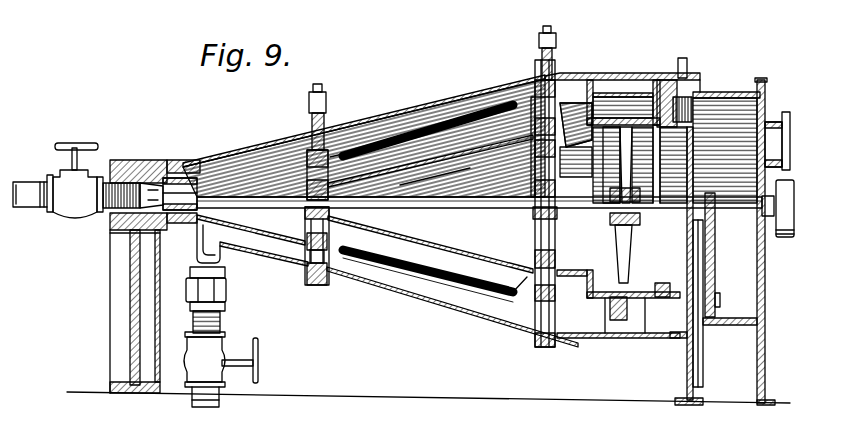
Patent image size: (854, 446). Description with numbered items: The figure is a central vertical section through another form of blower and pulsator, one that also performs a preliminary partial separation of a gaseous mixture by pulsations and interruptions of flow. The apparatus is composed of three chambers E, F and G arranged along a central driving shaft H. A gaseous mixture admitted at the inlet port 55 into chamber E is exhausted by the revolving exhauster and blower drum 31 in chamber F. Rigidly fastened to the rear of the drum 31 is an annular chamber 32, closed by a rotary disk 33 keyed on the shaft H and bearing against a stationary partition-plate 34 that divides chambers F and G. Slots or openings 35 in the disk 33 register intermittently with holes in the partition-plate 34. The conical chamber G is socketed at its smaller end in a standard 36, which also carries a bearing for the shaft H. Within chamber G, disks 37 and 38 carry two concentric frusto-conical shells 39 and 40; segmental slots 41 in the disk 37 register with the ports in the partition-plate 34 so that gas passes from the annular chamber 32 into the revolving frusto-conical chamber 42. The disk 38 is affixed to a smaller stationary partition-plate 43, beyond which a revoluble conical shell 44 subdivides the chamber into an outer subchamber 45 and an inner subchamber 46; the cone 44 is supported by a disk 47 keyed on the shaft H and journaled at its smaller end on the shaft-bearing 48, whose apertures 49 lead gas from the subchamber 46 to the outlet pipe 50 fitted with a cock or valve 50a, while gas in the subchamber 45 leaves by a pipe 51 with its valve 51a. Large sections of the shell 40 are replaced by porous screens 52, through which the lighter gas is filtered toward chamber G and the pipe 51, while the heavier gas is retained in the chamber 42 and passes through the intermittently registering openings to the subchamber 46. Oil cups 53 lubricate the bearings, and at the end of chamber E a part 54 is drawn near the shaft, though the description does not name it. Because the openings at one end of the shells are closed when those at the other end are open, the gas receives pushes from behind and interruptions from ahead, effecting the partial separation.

The revolving exhauster and blower drum 31 is at (652, 77).
The annular chamber 32 is at (582, 72).
The rotary disk 33 is at (560, 70).
The stationary partition-plate 34 is at (537, 87).
The slots or openings 35 is at (565, 130).
The standard 36 is at (120, 158).
The disk 37 is at (456, 182).
The disk 38 is at (332, 157).
The frusto-conical shell 39 is at (528, 277).
The frusto-conical shell 40 is at (333, 250).
The segmental slots or openings 41 is at (513, 117).
The revolving frusto-conical chamber 42 is at (467, 268).
The stationary partition-plate 43 is at (314, 270).
The conical shell 44 is at (285, 170).
The outer subchamber 45 is at (264, 249).
The inner subchamber 46 is at (251, 227).
The disk 47 is at (309, 237).
The shaft-bearing 48 is at (190, 158).
The apertures 49 is at (174, 222).
The outlet pipe 50 is at (110, 213).
The cock or valve 50a is at (70, 203).
The pipe 51 is at (221, 297).
The cock or valve 51a is at (212, 363).
The porous screens 52 is at (395, 140).
The oil cups 53 is at (324, 92).
The handle 54 is at (780, 237).
The inlet port 55 is at (773, 127).
The chamber E is at (722, 241).
The chamber F is at (623, 72).
The conical chamber G is at (377, 133).
The central driving shaft H is at (248, 196).